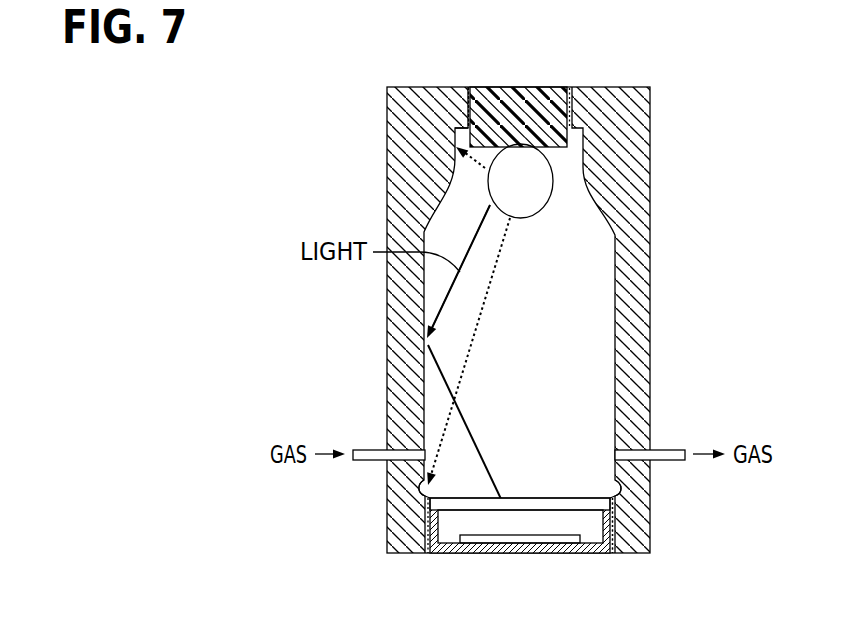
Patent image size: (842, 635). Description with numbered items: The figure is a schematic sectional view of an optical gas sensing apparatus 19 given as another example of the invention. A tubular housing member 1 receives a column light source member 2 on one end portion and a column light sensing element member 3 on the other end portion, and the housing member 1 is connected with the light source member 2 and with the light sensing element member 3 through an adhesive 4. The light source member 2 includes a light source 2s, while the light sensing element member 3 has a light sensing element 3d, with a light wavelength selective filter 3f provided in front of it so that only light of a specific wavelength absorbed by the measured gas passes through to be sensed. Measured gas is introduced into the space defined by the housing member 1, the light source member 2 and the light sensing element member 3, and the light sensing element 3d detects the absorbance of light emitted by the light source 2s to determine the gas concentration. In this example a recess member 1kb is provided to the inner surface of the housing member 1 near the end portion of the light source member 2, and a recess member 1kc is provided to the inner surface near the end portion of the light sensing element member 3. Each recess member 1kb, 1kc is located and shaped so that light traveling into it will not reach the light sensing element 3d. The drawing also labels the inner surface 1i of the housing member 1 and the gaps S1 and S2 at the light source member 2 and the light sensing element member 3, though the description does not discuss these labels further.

The optical gas sensing apparatus 19 is at (350, 69).
The housing member 1 is at (635, 355).
The inner wall surface 1i is at (615, 282).
The recess member 1kb is at (455, 129).
The recess member 1kc is at (415, 487).
The light source member 2 is at (527, 97).
The light source 2s is at (518, 170).
The light sensing element member 3 is at (557, 548).
The light wavelength selective filter 3f is at (482, 503).
The light sensing element 3d is at (523, 541).
The adhesive 4 is at (573, 100).
The gap between light source and housing S1 is at (567, 77).
The gap between detector and housing S2 is at (613, 570).